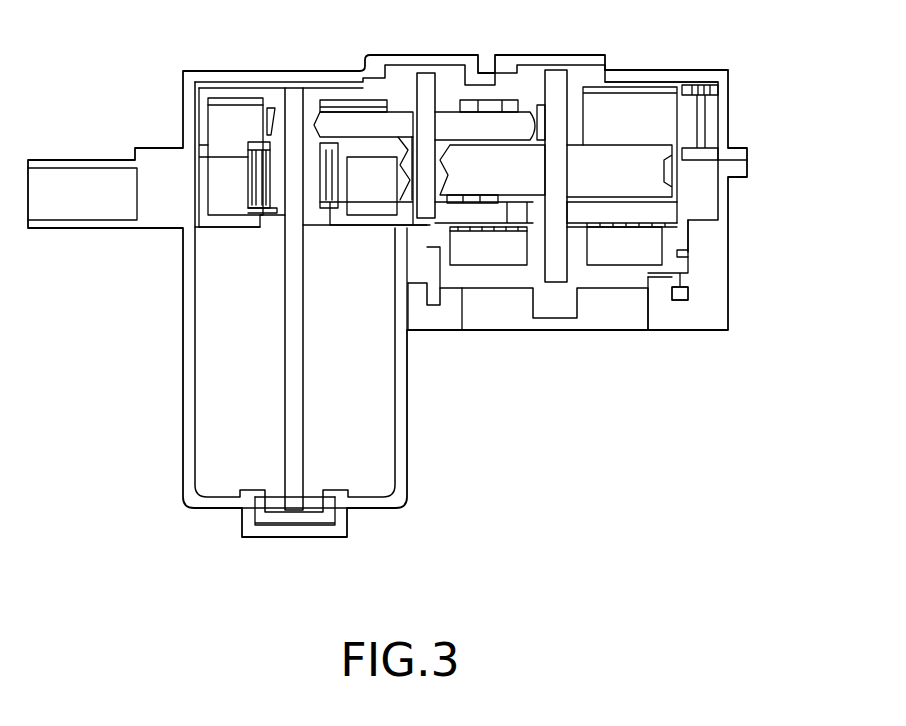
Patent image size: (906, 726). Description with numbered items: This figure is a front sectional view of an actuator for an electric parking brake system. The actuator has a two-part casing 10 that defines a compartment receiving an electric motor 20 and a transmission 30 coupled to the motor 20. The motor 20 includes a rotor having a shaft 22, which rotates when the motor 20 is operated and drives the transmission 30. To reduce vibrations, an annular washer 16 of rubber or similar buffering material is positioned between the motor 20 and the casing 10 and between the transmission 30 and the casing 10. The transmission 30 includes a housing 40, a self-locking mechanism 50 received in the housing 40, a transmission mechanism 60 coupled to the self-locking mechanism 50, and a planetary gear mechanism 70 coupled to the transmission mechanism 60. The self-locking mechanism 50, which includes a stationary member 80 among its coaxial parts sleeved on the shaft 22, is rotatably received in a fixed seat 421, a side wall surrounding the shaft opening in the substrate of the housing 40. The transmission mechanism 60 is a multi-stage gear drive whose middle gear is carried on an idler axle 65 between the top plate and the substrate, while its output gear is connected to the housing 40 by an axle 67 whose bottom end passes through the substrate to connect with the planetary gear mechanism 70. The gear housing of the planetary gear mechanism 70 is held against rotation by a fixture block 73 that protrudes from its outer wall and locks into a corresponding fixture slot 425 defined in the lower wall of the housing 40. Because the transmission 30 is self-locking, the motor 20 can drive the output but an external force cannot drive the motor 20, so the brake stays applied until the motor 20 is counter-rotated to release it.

The casing 10 is at (163, 208).
The annular washer 16 is at (605, 80).
The electric motor 20 is at (218, 328).
The shaft 22 is at (295, 113).
The transmission 30 is at (658, 413).
The housing 40 is at (685, 298).
The self-locking mechanism 50 is at (317, 198).
The transmission mechanism 60 is at (460, 187).
The idler axle 65 is at (425, 82).
The axle 67 is at (553, 85).
The planetary gear mechanism 70 is at (607, 257).
The fixture block 73 is at (682, 270).
The stationary member 80 is at (255, 143).
The fixed seat 421 is at (245, 168).
The fixture slot 425 is at (685, 257).